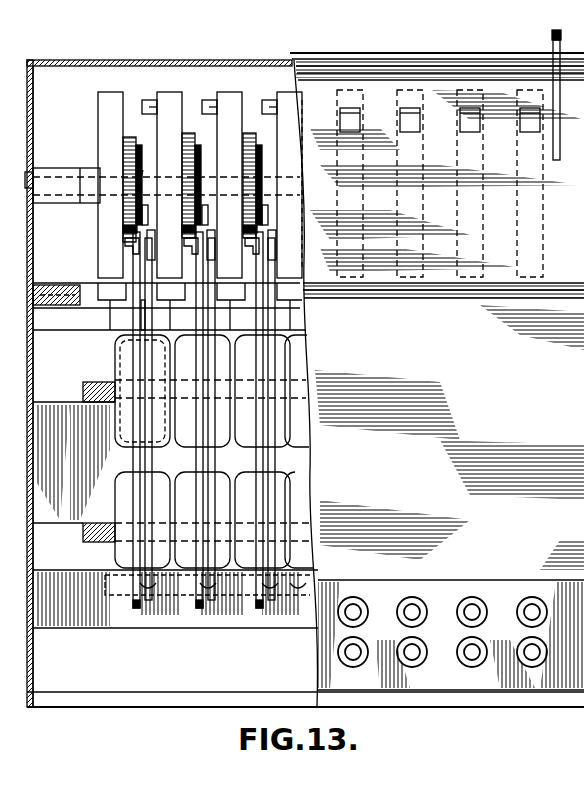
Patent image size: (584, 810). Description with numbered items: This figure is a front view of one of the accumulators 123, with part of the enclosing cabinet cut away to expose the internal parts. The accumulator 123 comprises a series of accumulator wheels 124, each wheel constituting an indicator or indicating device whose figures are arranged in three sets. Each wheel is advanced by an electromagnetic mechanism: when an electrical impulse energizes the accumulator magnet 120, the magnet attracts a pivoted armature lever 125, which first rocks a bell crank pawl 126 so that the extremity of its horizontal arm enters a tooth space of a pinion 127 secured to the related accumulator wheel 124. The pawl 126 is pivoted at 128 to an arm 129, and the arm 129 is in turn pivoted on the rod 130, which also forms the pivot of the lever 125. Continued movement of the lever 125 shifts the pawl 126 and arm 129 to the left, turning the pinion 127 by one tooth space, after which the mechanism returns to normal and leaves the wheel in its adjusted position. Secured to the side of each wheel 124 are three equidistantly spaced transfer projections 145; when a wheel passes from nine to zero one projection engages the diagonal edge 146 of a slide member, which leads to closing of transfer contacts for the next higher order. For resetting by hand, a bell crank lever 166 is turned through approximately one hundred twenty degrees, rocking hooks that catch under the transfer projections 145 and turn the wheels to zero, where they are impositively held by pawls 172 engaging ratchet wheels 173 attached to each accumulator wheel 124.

The accumulator magnet 120 is at (125, 364).
The accumulator 123 is at (378, 125).
The accumulator wheel 124 is at (217, 95).
The armature lever 125 is at (140, 462).
The bell crank pawl 126 is at (125, 290).
The pinion 127 is at (123, 155).
The pivot 128 is at (128, 244).
The arm 129 is at (142, 315).
The rod 130 is at (162, 595).
The transfer projection 145 is at (143, 172).
The diagonal edge 146 is at (152, 250).
The bell crank lever 166 is at (552, 40).
The pawl 172 is at (123, 230).
The ratchet wheel 173 is at (125, 138).